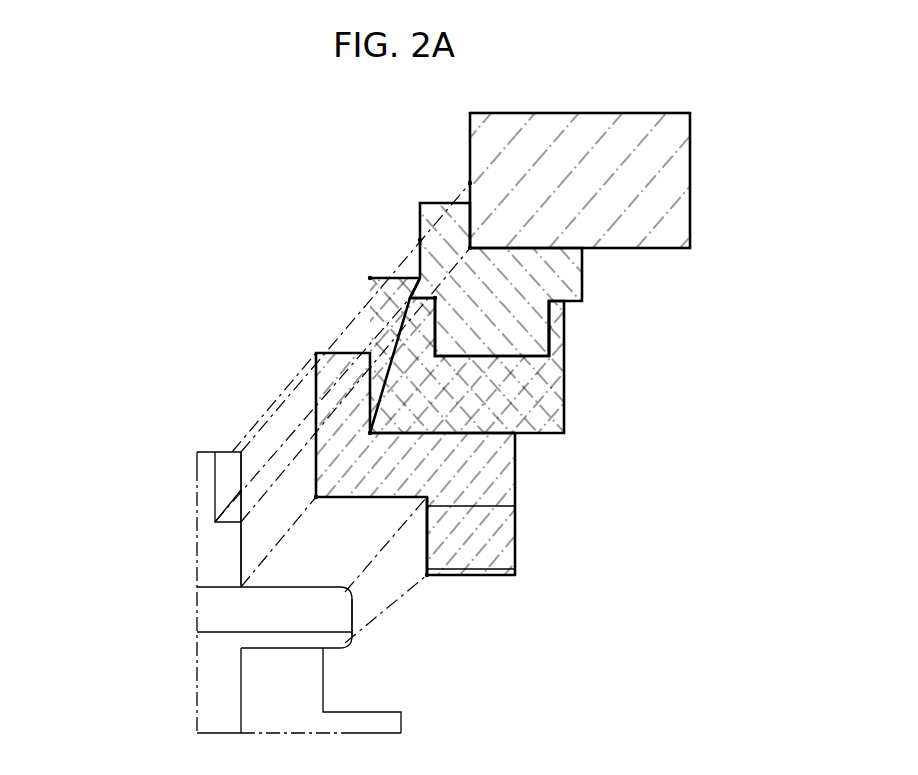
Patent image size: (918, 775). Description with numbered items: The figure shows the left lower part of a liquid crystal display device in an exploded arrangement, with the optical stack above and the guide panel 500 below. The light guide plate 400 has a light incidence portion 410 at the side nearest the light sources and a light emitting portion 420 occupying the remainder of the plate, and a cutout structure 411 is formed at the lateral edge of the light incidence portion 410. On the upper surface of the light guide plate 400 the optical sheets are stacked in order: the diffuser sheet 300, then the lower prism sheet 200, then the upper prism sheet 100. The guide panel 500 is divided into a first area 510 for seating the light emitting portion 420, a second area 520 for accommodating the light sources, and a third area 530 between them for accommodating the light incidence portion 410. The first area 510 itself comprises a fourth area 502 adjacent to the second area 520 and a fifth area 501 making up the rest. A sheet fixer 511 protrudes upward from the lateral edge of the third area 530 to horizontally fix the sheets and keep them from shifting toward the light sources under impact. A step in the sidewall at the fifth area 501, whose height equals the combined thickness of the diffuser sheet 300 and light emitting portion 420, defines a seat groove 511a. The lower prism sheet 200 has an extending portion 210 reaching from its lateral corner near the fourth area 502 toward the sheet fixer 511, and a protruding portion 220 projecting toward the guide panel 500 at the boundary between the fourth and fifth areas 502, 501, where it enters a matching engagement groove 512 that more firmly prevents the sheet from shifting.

The upper prism sheet 100 is at (690, 218).
The lower prism sheet 200 is at (582, 279).
The extending portion 210 is at (548, 328).
The protruding portion 220 is at (408, 290).
The diffuser sheet 300 is at (565, 370).
The light guide plate 400 is at (610, 481).
The light incidence portion 410 is at (493, 543).
The cutout structure 411 is at (362, 537).
The light emitting portion 420 is at (493, 486).
The guide panel 500 is at (245, 547).
The first area 510 is at (165, 474).
The fifth area 501 is at (180, 453).
The fourth area 502 is at (187, 553).
The sheet fixer 511 is at (348, 616).
The seat groove 511a is at (216, 519).
The engagement groove 512 is at (228, 517).
The second area 520 is at (239, 683).
The third area 530 is at (271, 617).